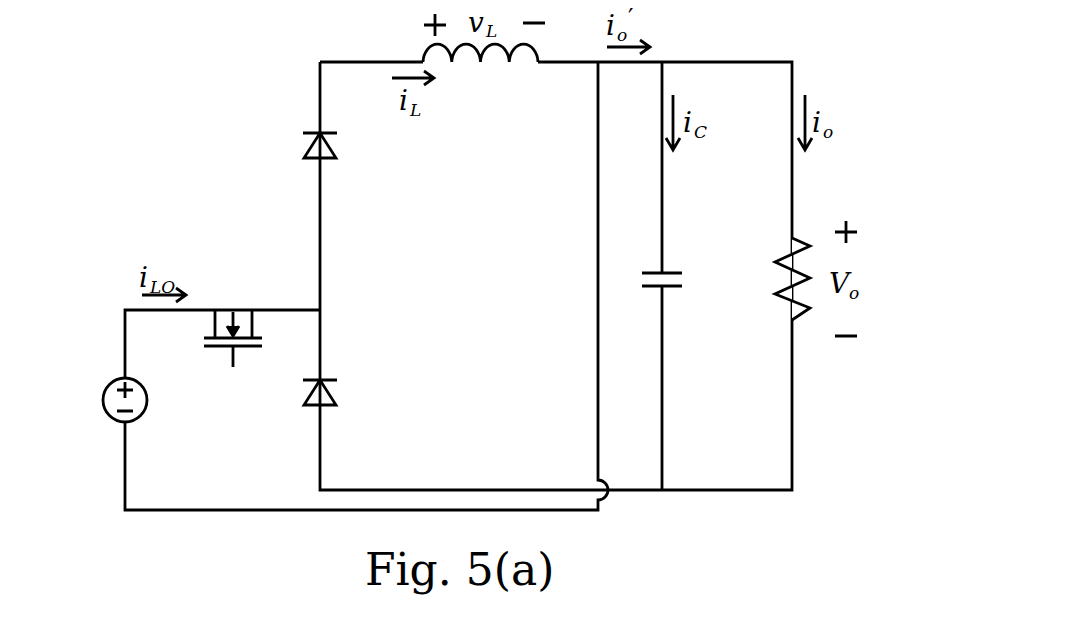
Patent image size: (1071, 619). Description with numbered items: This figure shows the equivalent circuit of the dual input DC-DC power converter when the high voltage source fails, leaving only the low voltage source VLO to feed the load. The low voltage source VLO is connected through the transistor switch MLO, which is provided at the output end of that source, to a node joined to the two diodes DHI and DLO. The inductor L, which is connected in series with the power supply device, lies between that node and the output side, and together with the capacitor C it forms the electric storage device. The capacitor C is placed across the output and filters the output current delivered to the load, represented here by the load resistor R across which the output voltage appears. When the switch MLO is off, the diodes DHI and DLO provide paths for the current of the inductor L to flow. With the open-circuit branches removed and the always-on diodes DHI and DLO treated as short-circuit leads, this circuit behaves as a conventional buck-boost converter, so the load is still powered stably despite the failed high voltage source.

The inductor L is at (480, 75).
The capacitor C is at (677, 282).
The load resistor R is at (775, 279).
The diode DHI is at (345, 151).
The diode DLO is at (347, 396).
The switch MLO is at (233, 318).
The voltage source VLO is at (108, 400).